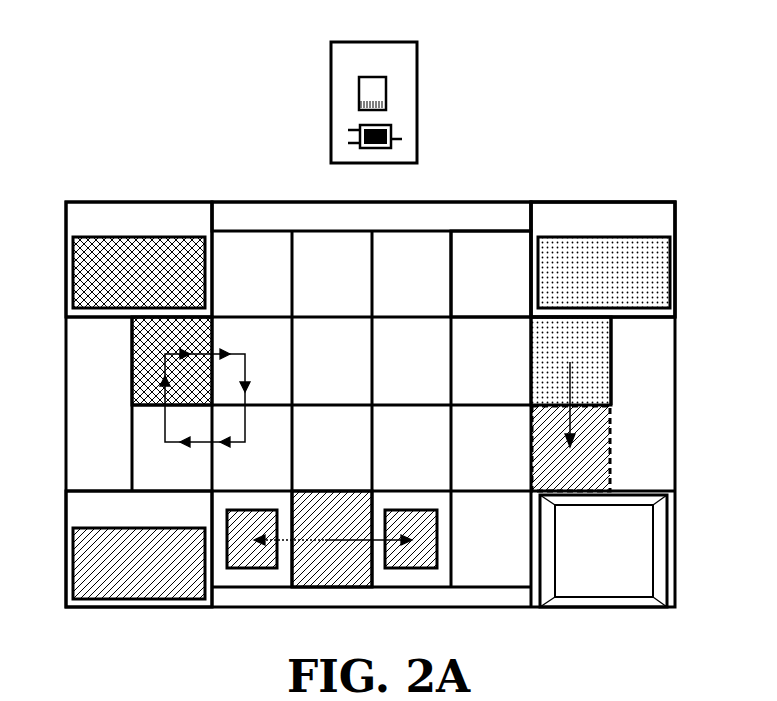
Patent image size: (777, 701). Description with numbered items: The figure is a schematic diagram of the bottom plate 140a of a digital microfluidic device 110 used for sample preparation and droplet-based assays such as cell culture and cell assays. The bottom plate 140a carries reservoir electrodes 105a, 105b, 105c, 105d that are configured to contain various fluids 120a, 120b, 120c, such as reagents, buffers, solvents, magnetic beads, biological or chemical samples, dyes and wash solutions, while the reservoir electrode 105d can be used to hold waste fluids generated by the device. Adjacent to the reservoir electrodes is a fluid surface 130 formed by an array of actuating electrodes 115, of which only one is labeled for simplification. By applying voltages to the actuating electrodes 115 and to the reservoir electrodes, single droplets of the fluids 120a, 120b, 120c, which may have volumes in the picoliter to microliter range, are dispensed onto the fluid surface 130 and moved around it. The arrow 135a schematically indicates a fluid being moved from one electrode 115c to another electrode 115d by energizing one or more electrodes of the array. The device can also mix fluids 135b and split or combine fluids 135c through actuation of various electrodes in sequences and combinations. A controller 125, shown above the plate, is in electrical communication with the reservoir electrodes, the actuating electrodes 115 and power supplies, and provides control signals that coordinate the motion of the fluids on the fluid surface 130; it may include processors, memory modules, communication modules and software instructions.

The digital microfluidic device 110 is at (111, 77).
The actuating electrodes 115 is at (272, 230).
The controller 125 is at (387, 69).
The fluid surface 130 is at (475, 240).
The bottom plate 140a is at (588, 202).
The reservoir electrode 105a is at (158, 228).
The reservoir electrode 105b is at (622, 228).
The reservoir electrode 105c is at (157, 517).
The reservoir electrode 105d is at (623, 555).
The fluid 120a is at (159, 279).
The fluid 120b is at (622, 279).
The fluid 120c is at (158, 570).
The arrow 135a is at (574, 390).
The mixing of fluids 135b is at (247, 393).
The splitting/combining of fluids 135c is at (331, 542).
The electrode 115c is at (613, 392).
The electrode 115d is at (612, 472).